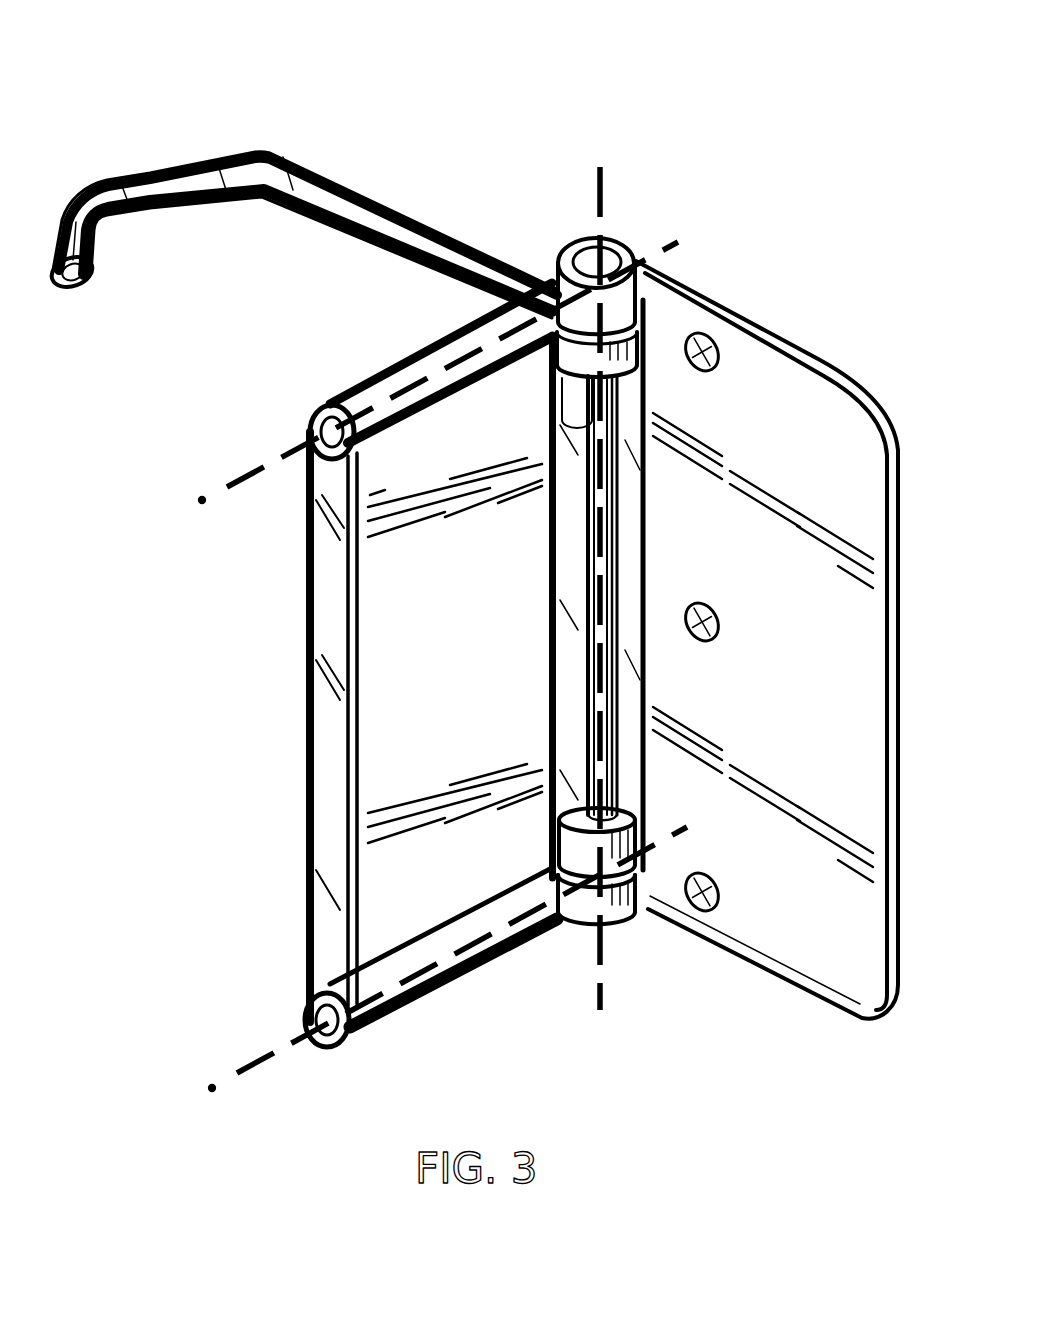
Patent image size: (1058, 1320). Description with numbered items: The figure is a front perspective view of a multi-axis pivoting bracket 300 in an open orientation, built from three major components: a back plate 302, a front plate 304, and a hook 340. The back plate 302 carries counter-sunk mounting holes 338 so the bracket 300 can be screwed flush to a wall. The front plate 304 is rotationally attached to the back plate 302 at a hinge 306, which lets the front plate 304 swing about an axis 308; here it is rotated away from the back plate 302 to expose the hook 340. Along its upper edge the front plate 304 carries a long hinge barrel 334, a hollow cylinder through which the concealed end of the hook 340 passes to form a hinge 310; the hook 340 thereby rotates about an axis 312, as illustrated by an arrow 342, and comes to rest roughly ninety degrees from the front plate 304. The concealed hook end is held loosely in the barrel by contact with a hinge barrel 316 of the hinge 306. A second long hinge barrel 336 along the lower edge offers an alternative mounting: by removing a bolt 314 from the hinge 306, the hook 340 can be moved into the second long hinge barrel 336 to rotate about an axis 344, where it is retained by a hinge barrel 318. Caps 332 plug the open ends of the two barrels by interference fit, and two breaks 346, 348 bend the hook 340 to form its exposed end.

The multi-axis pivoting bracket 300 is at (178, 108).
The back plate 302 is at (827, 682).
The front plate 304 is at (477, 671).
The hinge 306 is at (642, 937).
The axis 308 is at (606, 990).
The hinge 310 is at (407, 356).
The axis 312 is at (240, 480).
The bolt 314 is at (616, 242).
The hinge barrel 316 is at (558, 290).
The hinge barrel 318 is at (578, 918).
The caps 332 is at (309, 433).
The long hinge barrel 334 is at (350, 396).
The second long hinge barrel 336 is at (425, 1003).
The mounting holes 338 is at (718, 366).
The hook 340 is at (400, 216).
The arrow 342 is at (690, 270).
The axis 344 is at (258, 1064).
The break 346 is at (280, 142).
The break 348 is at (78, 172).